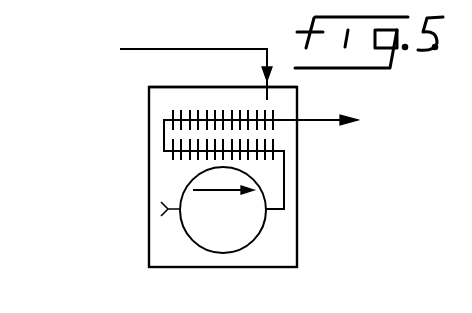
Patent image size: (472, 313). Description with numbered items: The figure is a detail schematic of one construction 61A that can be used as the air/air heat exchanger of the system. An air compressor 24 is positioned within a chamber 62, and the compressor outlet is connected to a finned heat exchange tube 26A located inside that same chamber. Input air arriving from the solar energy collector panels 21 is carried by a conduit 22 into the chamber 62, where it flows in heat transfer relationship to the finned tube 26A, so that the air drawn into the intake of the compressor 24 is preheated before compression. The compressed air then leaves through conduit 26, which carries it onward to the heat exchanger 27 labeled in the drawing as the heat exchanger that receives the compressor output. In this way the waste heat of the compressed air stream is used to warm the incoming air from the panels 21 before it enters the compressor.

The solar energy collector panels 21 is at (87, 48).
The conduit 22 is at (233, 33).
The air compressor 24 is at (212, 254).
The conduit 26 is at (314, 125).
The finned heat exchange tube 26A is at (178, 154).
The heat exchanger 27 is at (387, 122).
The construction for the air/air heat exchanger 61A is at (149, 237).
The chamber 62 is at (229, 66).